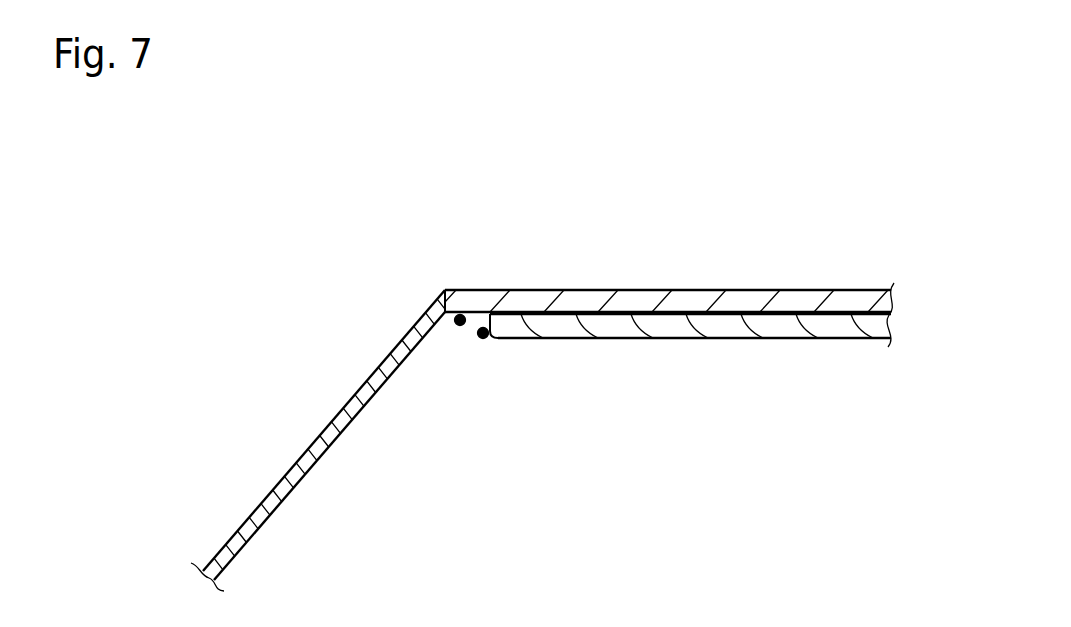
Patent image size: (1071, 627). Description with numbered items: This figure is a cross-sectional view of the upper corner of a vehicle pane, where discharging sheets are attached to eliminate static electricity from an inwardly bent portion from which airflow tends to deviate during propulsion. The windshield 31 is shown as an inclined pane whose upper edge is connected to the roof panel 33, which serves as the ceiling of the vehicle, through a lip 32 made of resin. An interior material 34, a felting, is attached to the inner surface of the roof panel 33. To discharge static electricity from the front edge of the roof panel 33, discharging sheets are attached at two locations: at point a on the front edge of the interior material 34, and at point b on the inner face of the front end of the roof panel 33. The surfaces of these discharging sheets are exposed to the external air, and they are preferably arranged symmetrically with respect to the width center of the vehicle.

The windshield 31 is at (308, 460).
The lip 32 is at (444, 289).
The roof panel 33 is at (650, 296).
The interior material 34 is at (725, 331).
The point a is at (487, 331).
The point b is at (459, 325).